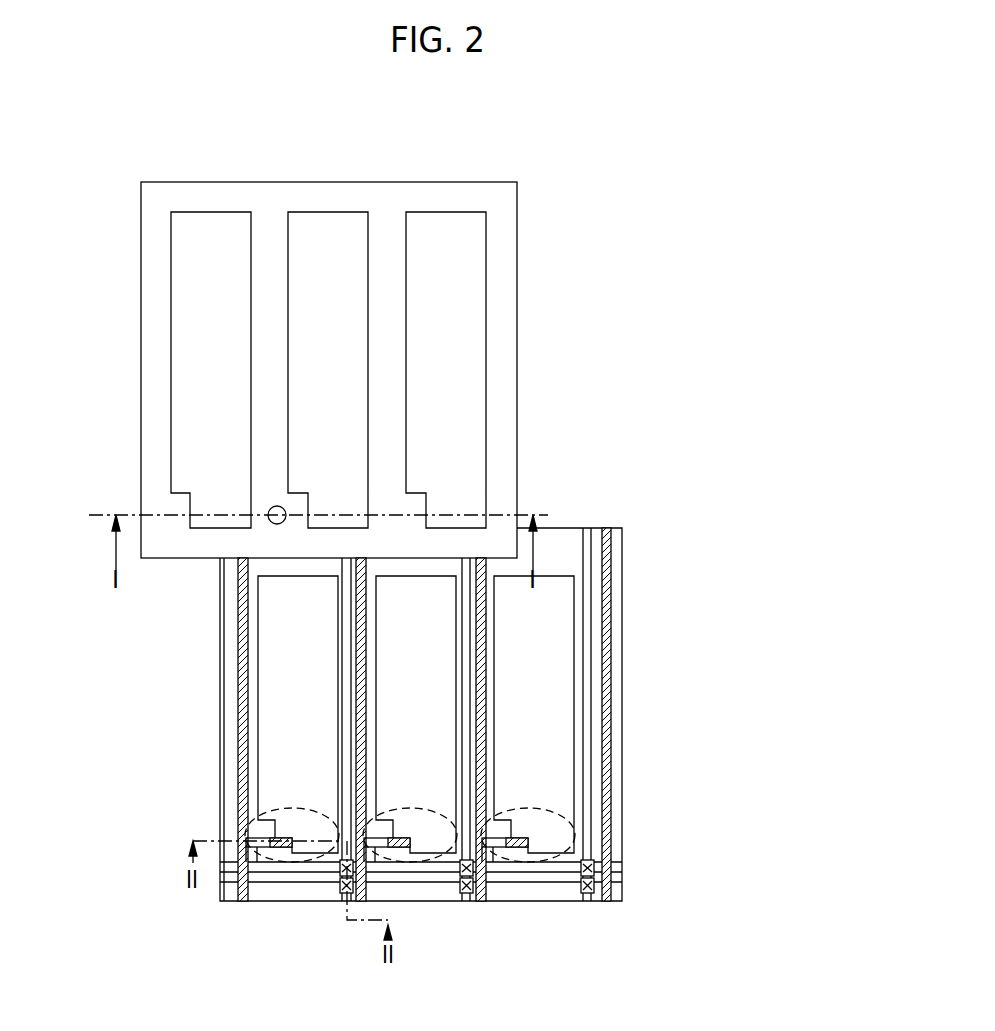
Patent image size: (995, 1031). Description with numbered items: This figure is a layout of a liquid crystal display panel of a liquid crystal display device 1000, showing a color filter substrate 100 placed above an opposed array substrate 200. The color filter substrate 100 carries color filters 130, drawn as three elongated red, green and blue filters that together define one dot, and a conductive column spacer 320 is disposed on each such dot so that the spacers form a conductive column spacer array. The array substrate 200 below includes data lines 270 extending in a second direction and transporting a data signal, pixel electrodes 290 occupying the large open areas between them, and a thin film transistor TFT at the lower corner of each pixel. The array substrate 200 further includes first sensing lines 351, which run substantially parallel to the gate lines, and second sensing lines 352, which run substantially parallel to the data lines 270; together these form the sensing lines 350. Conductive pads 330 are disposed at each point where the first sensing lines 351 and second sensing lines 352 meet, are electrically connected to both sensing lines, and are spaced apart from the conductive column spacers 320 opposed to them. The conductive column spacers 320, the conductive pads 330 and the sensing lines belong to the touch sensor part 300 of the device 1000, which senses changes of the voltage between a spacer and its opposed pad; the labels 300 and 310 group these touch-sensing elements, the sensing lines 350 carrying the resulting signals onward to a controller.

The liquid crystal display device 1000 is at (103, 155).
The color filter substrate 100 is at (548, 188).
The color filters 130 is at (193, 236).
The conductive column spacers 320 is at (272, 506).
The array substrate 200 is at (660, 616).
The pixel electrodes 290 is at (275, 652).
The data lines 270 is at (240, 710).
The conductive pads 330 is at (337, 887).
The sensing lines 350 is at (313, 966).
The first sensing lines 351 is at (233, 882).
The second sensing lines 352 is at (318, 850).
The touch sensor part 300 is at (736, 845).
The wiring 310 is at (736, 885).
The thin film transistor TFT is at (530, 862).